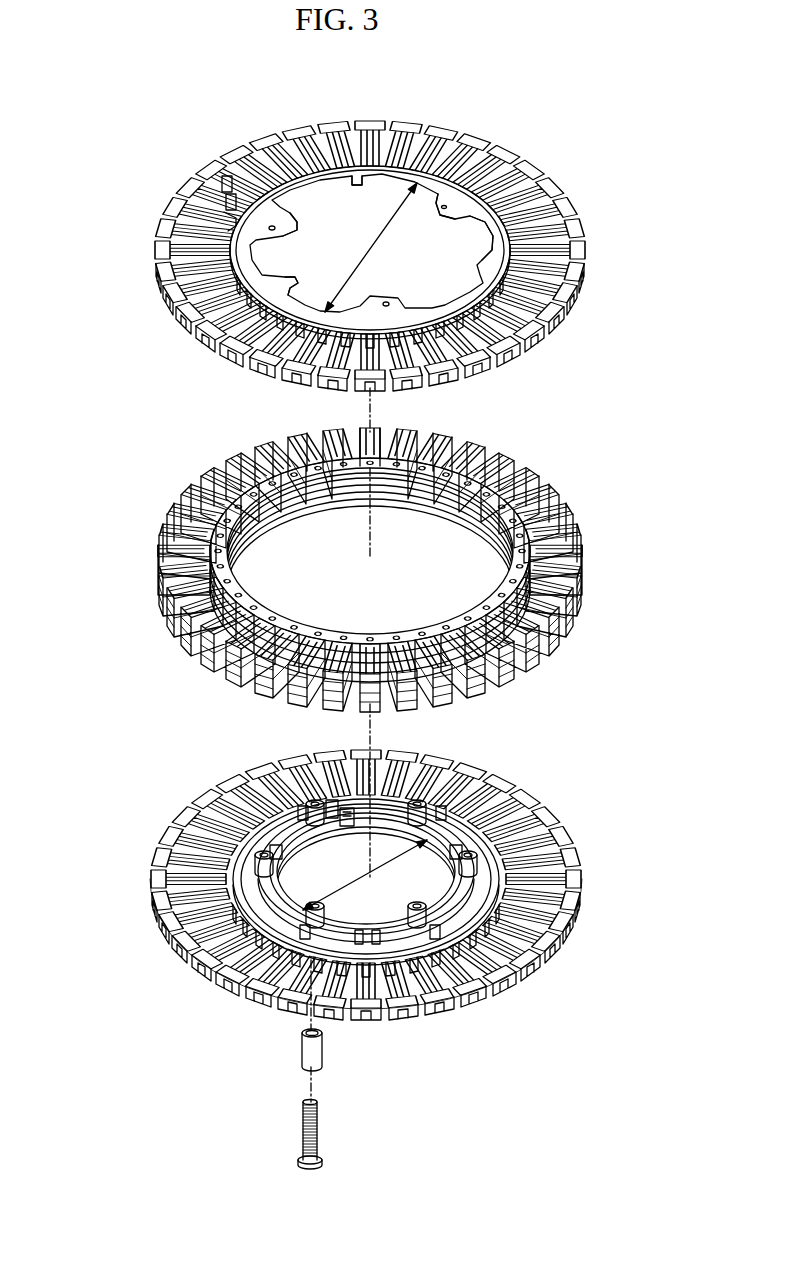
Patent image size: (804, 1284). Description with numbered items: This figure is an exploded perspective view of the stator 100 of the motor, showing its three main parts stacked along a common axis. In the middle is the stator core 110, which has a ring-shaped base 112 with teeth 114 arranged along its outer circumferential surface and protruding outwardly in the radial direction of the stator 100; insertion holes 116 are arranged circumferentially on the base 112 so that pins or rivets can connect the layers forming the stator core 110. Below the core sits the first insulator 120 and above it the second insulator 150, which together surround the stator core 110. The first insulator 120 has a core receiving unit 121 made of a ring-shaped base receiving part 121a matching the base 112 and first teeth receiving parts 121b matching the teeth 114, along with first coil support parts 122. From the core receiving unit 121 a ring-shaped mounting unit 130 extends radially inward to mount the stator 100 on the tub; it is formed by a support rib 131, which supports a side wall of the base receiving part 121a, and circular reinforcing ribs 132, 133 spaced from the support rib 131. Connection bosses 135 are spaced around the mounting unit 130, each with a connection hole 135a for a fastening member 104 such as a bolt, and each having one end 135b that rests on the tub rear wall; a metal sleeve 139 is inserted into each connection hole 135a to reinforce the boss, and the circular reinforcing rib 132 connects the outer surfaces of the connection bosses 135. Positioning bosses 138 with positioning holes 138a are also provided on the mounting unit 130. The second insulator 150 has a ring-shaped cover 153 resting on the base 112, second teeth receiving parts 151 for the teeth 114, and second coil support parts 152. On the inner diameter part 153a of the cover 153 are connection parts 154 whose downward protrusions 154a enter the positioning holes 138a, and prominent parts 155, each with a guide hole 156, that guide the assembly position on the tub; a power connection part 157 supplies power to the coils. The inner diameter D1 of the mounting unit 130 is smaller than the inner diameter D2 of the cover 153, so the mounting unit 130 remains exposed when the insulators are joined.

The stator 100 is at (397, 78).
The fastening member 104 is at (317, 1130).
The stator core 110 is at (596, 500).
The ring-shaped base 112 is at (503, 520).
The teeth 114 is at (530, 482).
The insertion holes 116 is at (443, 478).
The first insulator 120 is at (586, 787).
The core receiving unit 121 is at (75, 877).
The base receiving part 121a is at (155, 903).
The first teeth receiving parts 121b is at (173, 880).
The first coil support parts 122 is at (240, 983).
The mounting unit 130 is at (308, 841).
The support rib 131 is at (520, 978).
The circular reinforcing rib 132 is at (393, 833).
The circular reinforcing rib 133 is at (548, 858).
The connection bosses 135 is at (318, 935).
The connection hole 135a is at (413, 920).
The end of connection boss 135b is at (407, 922).
The positioning bosses 138 is at (347, 815).
The positioning hole 138a is at (333, 805).
The sleeve 139 is at (318, 1048).
The second insulator 150 is at (574, 168).
The second teeth receiving parts 151 is at (213, 337).
The second coil support parts 152 is at (250, 360).
The cover 153 is at (383, 167).
The inner diameter part 153a is at (293, 200).
The connection parts 154 is at (292, 287).
The protrusions 154a is at (347, 192).
The prominent parts 155 is at (457, 232).
The guide hole 156 is at (443, 220).
The power connection part 157 is at (228, 182).
The inner diameter of mounting unit D1 is at (365, 875).
The inner diameter of cover D2 is at (371, 247).